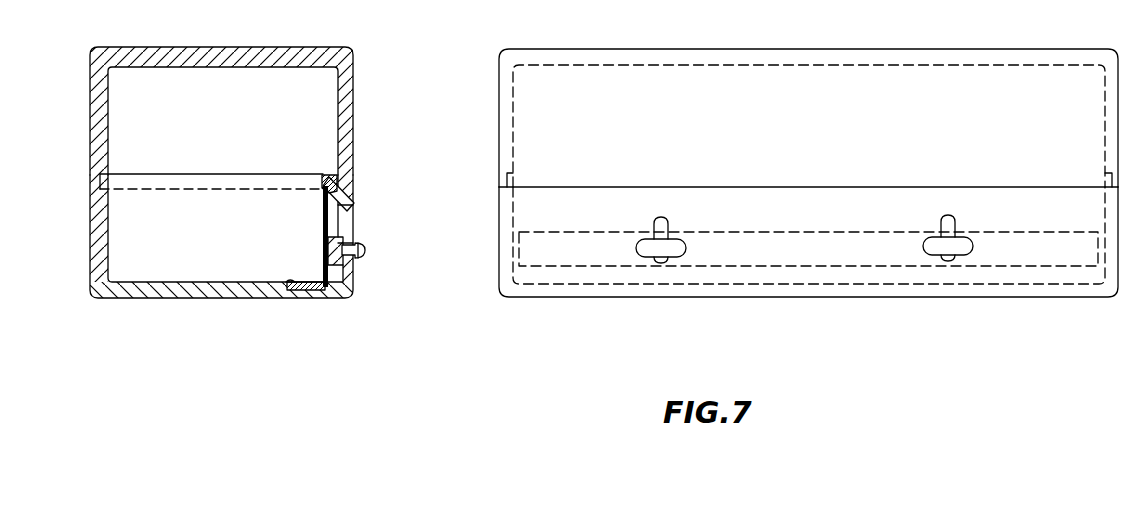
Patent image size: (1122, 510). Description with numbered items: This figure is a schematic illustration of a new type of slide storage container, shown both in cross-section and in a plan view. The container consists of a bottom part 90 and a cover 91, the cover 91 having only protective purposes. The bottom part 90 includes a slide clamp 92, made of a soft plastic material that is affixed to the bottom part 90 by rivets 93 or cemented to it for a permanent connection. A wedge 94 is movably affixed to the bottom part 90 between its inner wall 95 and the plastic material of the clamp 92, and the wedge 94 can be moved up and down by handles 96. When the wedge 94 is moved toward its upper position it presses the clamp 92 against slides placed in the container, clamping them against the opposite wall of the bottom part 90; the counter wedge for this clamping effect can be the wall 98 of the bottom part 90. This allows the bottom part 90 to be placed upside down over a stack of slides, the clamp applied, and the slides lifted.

The bottom part 90 is at (97, 220).
The cover 91 is at (333, 47).
The slide clamp 92 is at (323, 228).
The rivets 93 is at (322, 175).
The wedge 94 is at (355, 263).
The inner wall 95 is at (330, 216).
The handles 96 is at (366, 249).
The wall 98 is at (349, 206).